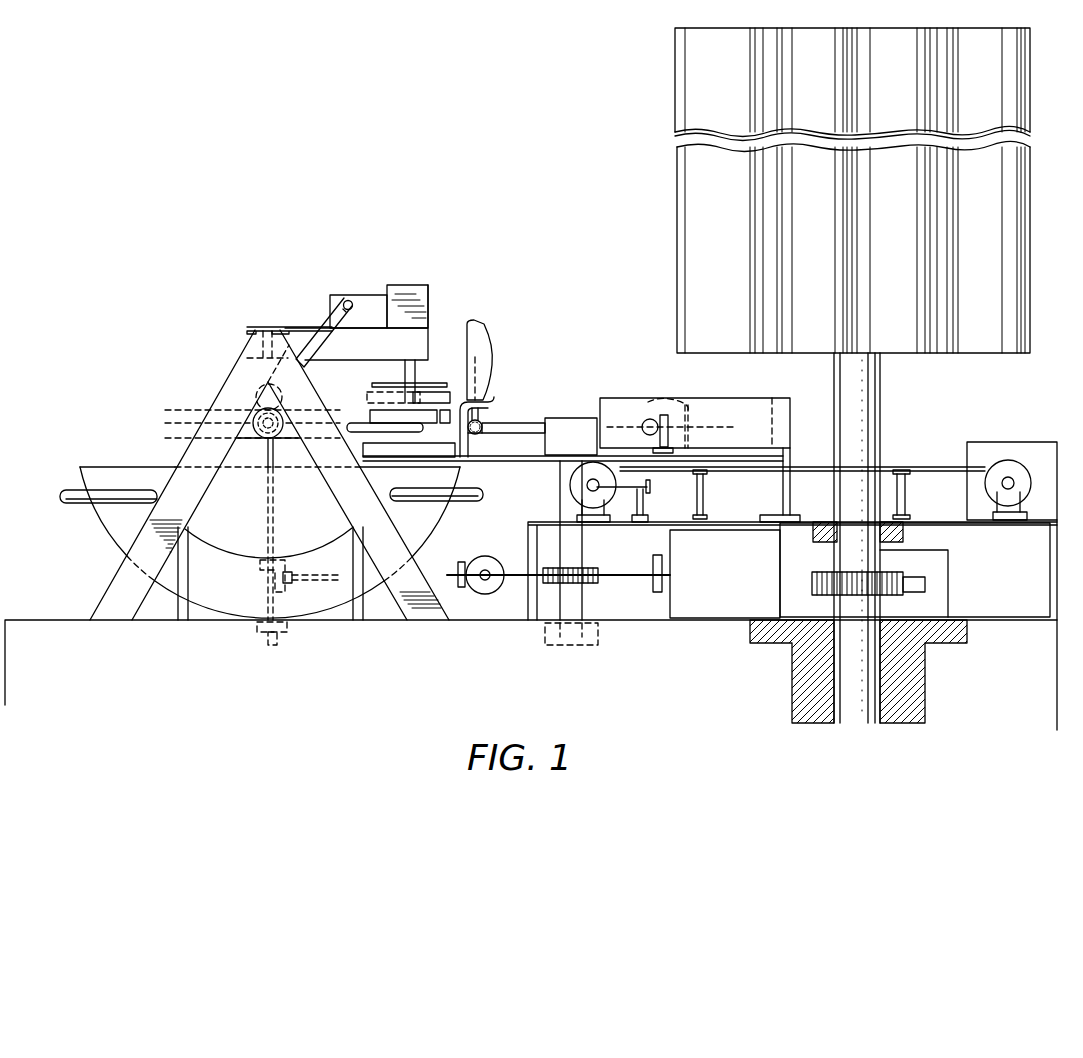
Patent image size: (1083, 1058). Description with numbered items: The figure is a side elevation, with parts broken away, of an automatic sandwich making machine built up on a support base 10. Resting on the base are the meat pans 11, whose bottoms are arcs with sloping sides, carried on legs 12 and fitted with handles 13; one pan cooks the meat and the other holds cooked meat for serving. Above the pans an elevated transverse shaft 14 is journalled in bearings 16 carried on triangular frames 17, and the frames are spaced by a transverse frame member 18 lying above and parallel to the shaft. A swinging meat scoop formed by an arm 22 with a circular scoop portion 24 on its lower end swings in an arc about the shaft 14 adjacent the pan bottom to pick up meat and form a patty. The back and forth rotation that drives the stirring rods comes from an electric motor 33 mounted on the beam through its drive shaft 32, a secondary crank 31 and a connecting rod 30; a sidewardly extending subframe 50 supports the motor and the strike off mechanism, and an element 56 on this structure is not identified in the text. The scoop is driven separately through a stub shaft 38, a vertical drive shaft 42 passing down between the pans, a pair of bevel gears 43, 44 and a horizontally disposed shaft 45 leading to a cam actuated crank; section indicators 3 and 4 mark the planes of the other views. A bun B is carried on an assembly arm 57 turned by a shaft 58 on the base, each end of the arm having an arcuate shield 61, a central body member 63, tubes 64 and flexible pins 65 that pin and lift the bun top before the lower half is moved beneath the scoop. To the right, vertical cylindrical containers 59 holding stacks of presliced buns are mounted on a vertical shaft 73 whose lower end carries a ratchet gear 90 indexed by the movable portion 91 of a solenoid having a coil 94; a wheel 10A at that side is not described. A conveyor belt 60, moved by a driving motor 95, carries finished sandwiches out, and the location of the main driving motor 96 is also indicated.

The section line 3- 3 is at (263, 283).
The section line 4- 4 is at (263, 531).
The bun B is at (490, 322).
The support base 10 is at (230, 623).
The wheel 10A is at (997, 522).
The meat pan 11 is at (244, 513).
The legs 12 is at (190, 583).
The handles 13 is at (61, 490).
The shaft 14 is at (247, 423).
The bearings 16 is at (250, 442).
The triangular frames 17 is at (113, 583).
The transverse frame member 18 is at (247, 327).
The arm 22 is at (360, 420).
The meat scoop 24 is at (453, 410).
The connecting rod 30 is at (330, 345).
The secondary crank 31 is at (342, 313).
The drive shaft 32 is at (348, 300).
The electric motor 33 is at (373, 295).
The stub shaft 38 is at (253, 390).
The vertical drive shaft 42 is at (278, 506).
The bevel gear 43 is at (282, 556).
The bevel gear 44 is at (295, 573).
The horizontally disposed shaft 45 is at (461, 570).
The subframe 50 is at (396, 351).
The housing 56 is at (415, 285).
The assembly arm 57 is at (519, 462).
The shaft 58 is at (571, 545).
The cylindrical containers 59 is at (675, 218).
The conveyor belt 60 is at (893, 466).
The arcuate shield 61 is at (673, 400).
The body member 63 is at (568, 418).
The tubes 64 is at (517, 423).
The flexible pins 65 is at (706, 424).
The vertical shaft 73 is at (880, 406).
The ratchet gear 90 is at (890, 597).
The movable portion of solenoid 91 is at (923, 588).
The solenoid coil 94 is at (940, 573).
The driving motor 95 is at (1040, 442).
The main driving motor 96 is at (738, 591).